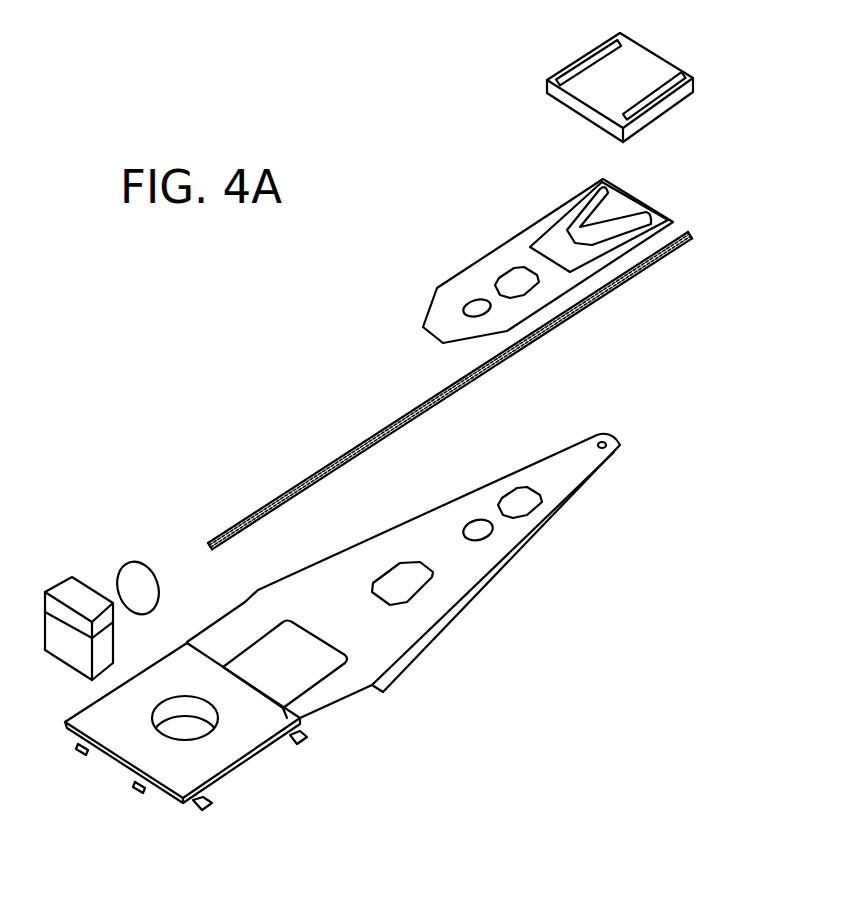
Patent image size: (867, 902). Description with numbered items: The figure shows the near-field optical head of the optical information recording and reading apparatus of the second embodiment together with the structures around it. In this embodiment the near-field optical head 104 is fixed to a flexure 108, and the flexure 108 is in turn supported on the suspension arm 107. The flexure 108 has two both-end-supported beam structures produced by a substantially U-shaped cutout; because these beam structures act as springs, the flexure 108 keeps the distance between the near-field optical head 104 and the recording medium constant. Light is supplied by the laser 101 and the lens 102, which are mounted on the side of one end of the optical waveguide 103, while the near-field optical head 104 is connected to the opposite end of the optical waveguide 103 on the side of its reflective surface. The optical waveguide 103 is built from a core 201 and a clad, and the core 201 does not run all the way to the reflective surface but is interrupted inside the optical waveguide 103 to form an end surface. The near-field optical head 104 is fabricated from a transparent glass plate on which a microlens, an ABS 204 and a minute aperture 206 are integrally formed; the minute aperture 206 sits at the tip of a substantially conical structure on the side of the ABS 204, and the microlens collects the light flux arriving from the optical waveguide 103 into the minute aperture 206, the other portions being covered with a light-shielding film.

The laser 101 is at (79, 579).
The lens 102 is at (148, 541).
The optical waveguide 103 is at (451, 392).
The near-field optical head 104 is at (562, 87).
The suspension arm 107 is at (342, 622).
The flexure 108 is at (542, 261).
The core 201 is at (450, 390).
The ABS 204 is at (541, 62).
The minute aperture 206 is at (686, 73).